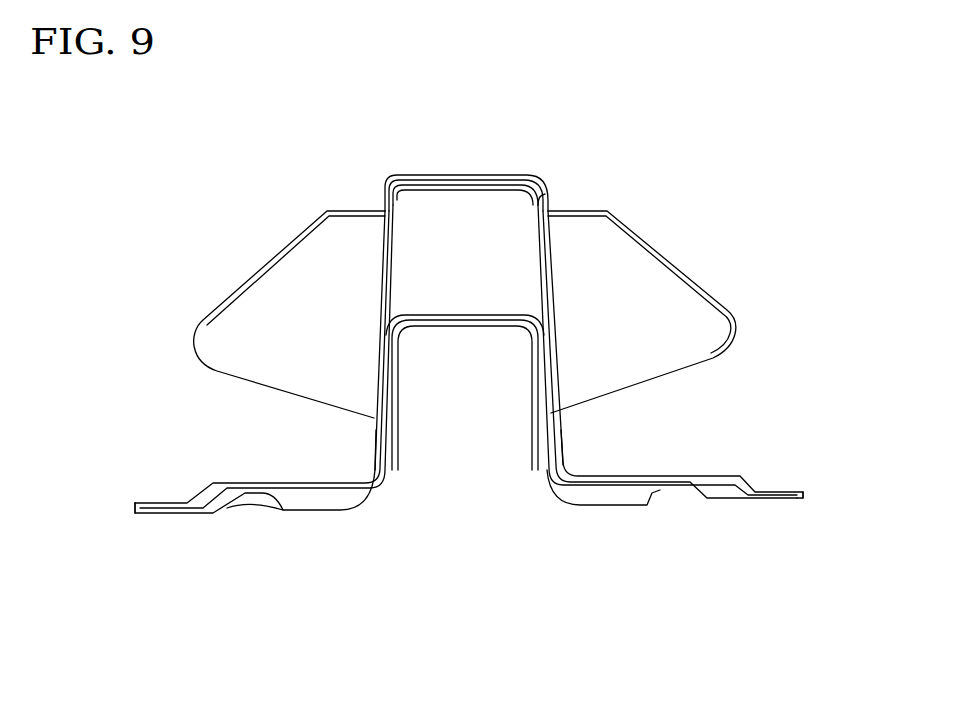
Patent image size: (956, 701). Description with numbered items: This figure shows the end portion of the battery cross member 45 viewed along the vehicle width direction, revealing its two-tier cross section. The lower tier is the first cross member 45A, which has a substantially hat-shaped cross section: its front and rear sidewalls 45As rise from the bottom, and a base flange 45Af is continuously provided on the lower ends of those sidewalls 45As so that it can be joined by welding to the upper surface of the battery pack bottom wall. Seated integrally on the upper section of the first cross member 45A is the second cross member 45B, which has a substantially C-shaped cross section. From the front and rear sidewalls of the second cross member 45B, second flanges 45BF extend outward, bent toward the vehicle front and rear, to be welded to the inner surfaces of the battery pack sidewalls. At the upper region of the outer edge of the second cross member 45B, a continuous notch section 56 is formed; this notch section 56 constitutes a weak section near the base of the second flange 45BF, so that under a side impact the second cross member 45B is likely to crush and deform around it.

The battery cross member 45 is at (548, 183).
The first cross member 45A is at (563, 452).
The second cross member 45B is at (440, 176).
The second flange 45BF is at (257, 300).
The notch section 56 is at (550, 203).
The sidewall 45As is at (388, 447).
The base flange 45Af is at (173, 513).